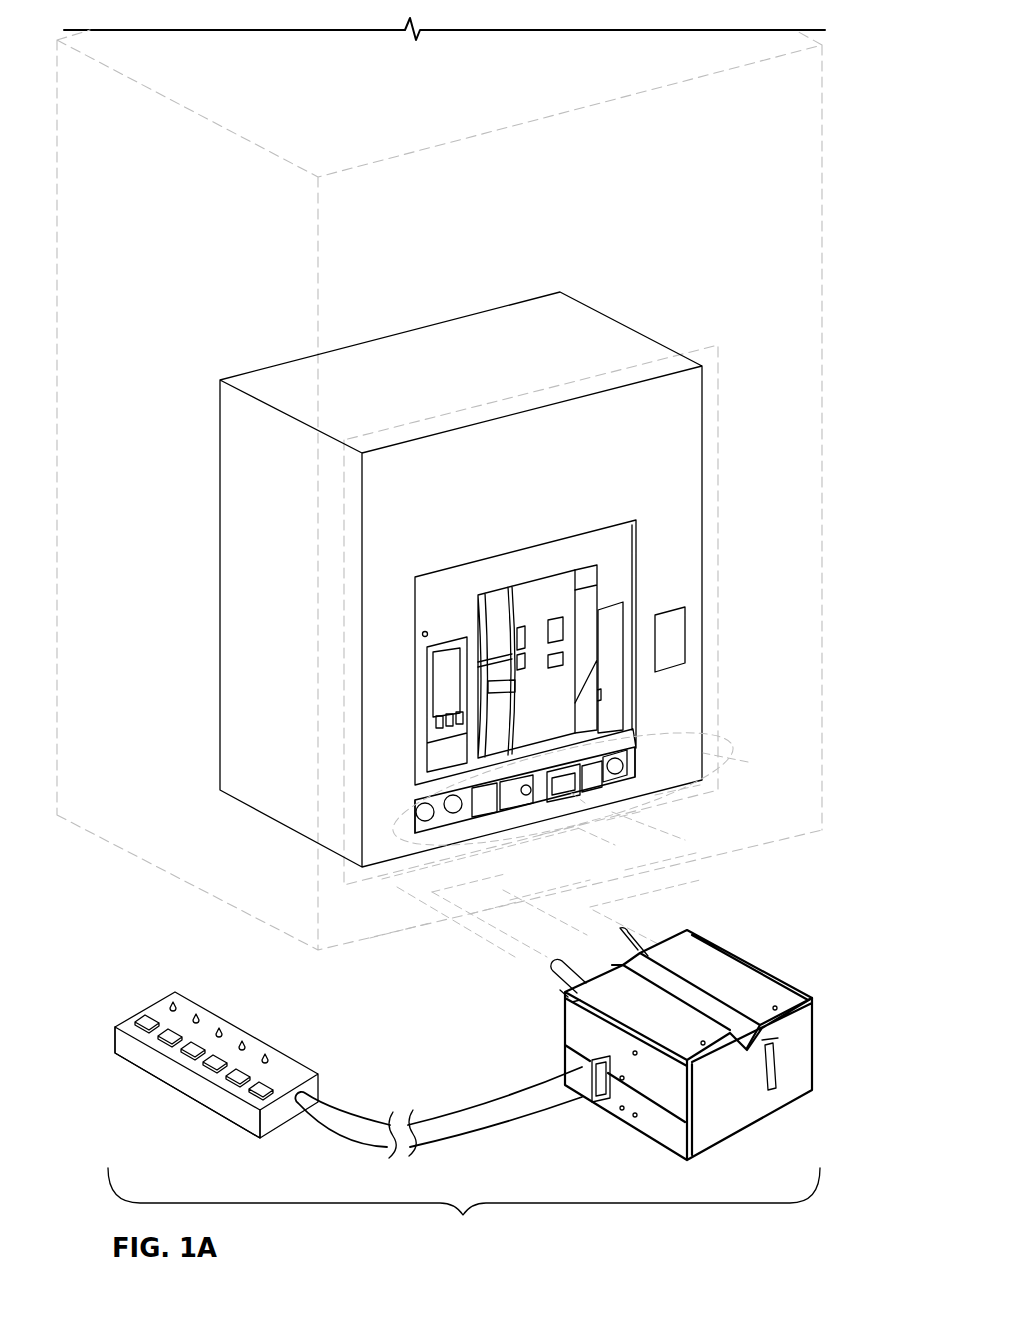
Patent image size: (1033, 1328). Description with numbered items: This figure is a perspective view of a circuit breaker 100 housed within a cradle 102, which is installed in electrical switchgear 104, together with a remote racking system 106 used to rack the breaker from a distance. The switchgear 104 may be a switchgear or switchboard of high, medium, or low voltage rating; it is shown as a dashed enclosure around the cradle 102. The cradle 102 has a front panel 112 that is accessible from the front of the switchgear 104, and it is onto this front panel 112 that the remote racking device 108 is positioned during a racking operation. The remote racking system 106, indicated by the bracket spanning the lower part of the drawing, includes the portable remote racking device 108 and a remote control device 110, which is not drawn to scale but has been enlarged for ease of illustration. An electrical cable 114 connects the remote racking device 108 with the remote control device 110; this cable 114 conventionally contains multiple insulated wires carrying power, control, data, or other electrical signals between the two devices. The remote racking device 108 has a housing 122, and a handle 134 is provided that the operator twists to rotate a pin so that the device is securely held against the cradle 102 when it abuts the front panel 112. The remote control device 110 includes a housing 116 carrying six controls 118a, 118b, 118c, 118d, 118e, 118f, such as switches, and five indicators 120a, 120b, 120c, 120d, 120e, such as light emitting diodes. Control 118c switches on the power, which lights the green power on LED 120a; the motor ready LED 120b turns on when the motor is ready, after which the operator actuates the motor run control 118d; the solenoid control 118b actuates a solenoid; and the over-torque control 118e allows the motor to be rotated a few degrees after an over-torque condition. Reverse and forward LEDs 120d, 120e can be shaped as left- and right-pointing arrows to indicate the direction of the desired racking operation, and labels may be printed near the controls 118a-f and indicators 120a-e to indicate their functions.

The circuit breaker 100 is at (615, 572).
The cradle 102 is at (702, 417).
The switchgear 104 is at (147, 862).
The remote racking system 106 is at (445, 1083).
The remote racking device 108 is at (758, 988).
The remote control device 110 is at (215, 1058).
The front panel 112 is at (650, 748).
The electrical cable 114 is at (455, 1127).
The housing 116 is at (115, 1052).
The control 118a is at (143, 1032).
The solenoid control 118b is at (165, 1045).
The control 118c is at (190, 1058).
The motor run control 118d is at (213, 1069).
The over-torque control 118e is at (233, 1083).
The control 118f is at (263, 1094).
The power on LED 120a is at (172, 1001).
The motor ready LED 120b is at (197, 1014).
The indicator 120c is at (220, 1030).
The reverse LED 120d is at (245, 1043).
The forward LED 120e is at (265, 1054).
The housing 122 is at (699, 1048).
The handle 134 is at (812, 1042).